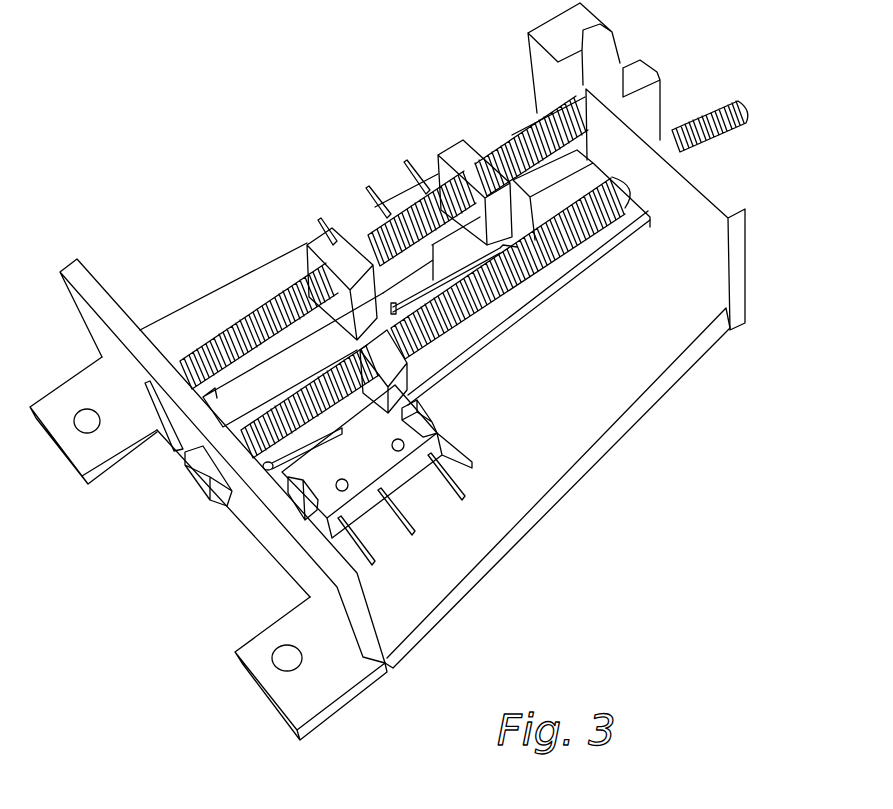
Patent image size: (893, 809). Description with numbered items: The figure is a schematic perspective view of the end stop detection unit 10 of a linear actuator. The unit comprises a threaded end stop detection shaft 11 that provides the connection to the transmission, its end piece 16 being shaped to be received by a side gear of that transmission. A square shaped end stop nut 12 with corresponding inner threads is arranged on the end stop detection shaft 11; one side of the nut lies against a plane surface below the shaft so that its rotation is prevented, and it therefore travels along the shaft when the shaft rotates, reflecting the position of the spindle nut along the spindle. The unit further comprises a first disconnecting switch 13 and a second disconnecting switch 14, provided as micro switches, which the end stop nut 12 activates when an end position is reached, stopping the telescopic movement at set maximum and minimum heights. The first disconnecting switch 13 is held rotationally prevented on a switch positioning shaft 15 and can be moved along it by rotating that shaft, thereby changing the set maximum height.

The end stop detection unit 10 is at (648, 463).
The end stop detection shaft 11 is at (567, 243).
The end stop nut 12 is at (413, 365).
The first disconnecting switch 13 is at (433, 245).
The second disconnecting switch 14 is at (400, 478).
The switch positioning shaft 15 is at (518, 132).
The end piece 16 is at (203, 483).